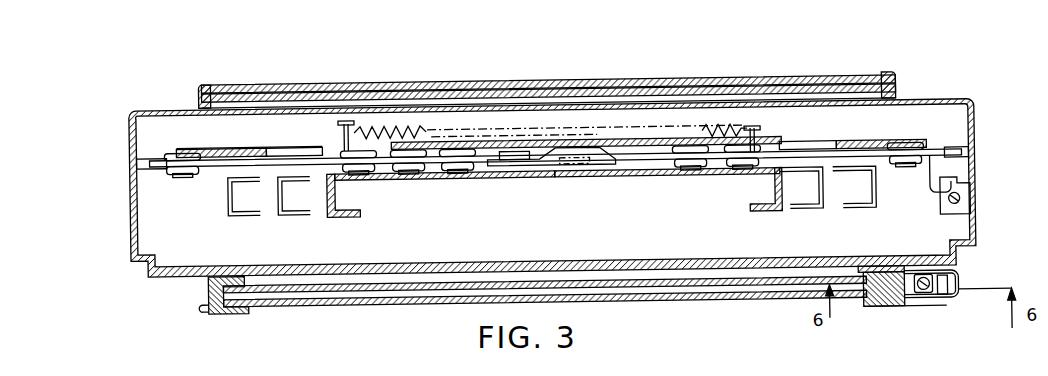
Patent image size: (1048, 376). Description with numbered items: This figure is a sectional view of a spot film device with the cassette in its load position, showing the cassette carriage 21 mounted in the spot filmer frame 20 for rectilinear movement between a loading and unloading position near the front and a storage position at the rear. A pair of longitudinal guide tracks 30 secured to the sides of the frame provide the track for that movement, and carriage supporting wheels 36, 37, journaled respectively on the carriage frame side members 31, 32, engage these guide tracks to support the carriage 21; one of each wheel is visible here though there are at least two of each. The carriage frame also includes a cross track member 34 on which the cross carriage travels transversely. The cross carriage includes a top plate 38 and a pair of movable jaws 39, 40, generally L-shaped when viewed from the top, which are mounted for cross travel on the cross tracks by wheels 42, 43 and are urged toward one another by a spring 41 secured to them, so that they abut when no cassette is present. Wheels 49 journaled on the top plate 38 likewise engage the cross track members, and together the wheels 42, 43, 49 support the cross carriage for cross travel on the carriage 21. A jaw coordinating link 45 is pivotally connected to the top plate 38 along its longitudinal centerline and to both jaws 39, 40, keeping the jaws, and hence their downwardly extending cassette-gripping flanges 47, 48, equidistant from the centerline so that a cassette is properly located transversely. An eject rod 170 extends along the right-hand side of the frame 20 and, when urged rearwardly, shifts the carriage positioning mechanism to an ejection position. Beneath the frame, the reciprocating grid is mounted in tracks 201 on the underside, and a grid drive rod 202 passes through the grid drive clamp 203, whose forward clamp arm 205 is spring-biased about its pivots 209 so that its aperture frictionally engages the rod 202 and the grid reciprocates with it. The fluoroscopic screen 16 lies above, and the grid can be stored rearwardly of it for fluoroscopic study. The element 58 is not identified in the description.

The fluoroscopic screen 16 is at (787, 83).
The spot filmer frame 20 is at (977, 228).
The cassette carriage 21 is at (210, 141).
The longitudinal guide tracks 30 is at (145, 163).
The frame side member 31 is at (255, 144).
The frame side member 32 is at (892, 145).
The frame cross track member 34 is at (627, 161).
The carriage supporting wheel 36 is at (185, 165).
The carriage supporting wheel 37 is at (903, 171).
The top plate 38 is at (648, 140).
The movable jaw 39 is at (380, 176).
The movable jaw 40 is at (703, 173).
The spring 41 is at (422, 133).
The wheel 42 is at (346, 145).
The wheel 43 is at (758, 153).
The jaw coordinating link 45 is at (515, 165).
The cassette-gripping flange 47 is at (226, 206).
The cassette-gripping flange 48 is at (808, 212).
The wheels 49 is at (432, 170).
The hook bracket 58 is at (968, 185).
The eject rod 170 is at (963, 204).
The tracks 201 is at (220, 305).
The grid drive rod 202 is at (922, 298).
The grid drive clamp 203 is at (957, 281).
The forward clamp arm 205 is at (946, 299).
The pivots 209 is at (862, 270).